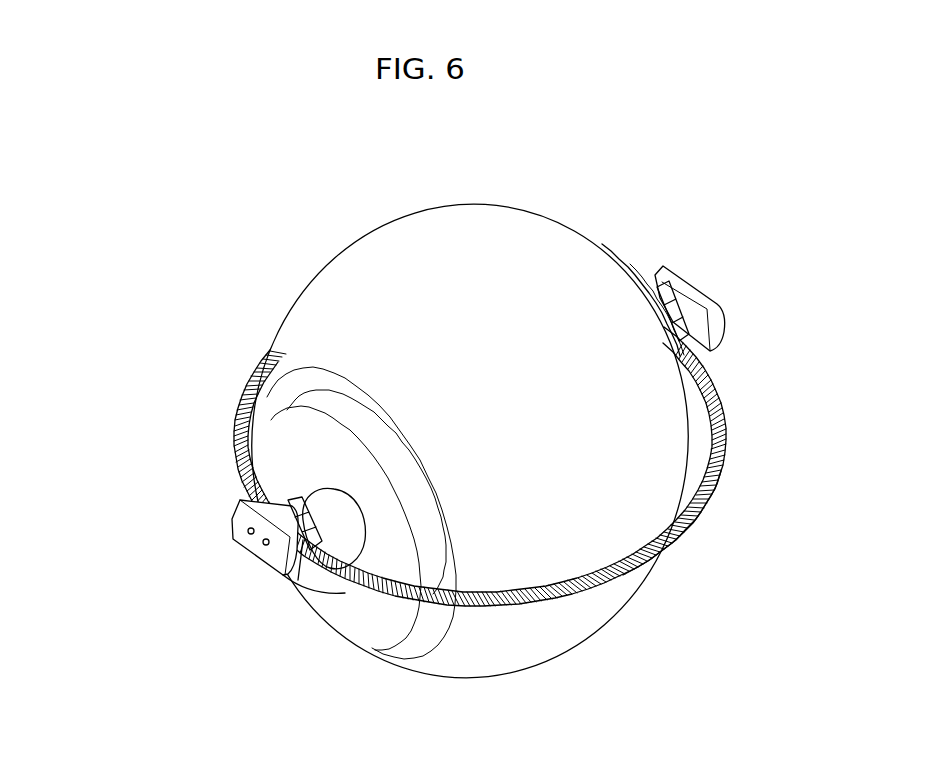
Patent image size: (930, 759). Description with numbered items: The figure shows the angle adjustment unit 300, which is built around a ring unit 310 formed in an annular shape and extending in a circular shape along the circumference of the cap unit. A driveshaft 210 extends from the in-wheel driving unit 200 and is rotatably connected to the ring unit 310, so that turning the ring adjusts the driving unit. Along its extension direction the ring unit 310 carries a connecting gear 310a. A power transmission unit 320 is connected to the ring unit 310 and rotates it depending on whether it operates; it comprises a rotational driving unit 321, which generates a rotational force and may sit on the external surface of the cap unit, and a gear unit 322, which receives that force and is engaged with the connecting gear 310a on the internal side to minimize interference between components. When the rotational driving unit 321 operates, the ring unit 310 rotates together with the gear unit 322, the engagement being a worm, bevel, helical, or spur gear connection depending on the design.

The in-wheel driving unit 200 is at (347, 246).
The driveshaft 210 is at (350, 568).
The angle adjustment unit 300 is at (268, 643).
The ring unit 310 is at (501, 488).
The connecting gear 310a is at (706, 510).
The power transmission unit 320 is at (794, 239).
The rotational driving unit 321 is at (697, 308).
The gear unit 322 is at (668, 278).